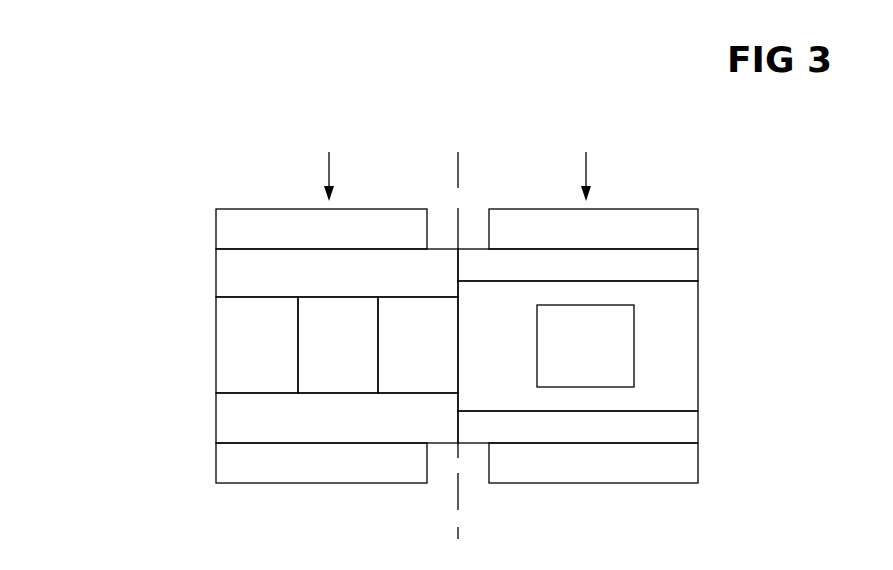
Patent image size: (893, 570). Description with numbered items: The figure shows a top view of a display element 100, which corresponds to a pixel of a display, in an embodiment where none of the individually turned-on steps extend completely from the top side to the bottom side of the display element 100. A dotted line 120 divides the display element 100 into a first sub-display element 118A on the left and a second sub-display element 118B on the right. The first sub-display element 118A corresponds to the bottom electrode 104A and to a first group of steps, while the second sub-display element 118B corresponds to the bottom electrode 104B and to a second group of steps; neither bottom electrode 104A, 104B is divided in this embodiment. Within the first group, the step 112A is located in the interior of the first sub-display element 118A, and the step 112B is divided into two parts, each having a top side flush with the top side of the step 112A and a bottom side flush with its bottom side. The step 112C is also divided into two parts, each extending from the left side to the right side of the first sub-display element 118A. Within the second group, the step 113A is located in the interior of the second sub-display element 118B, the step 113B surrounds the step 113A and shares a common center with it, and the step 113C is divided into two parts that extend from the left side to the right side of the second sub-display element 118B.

The display element 100 is at (113, 219).
The bottom electrode 104A is at (298, 240).
The bottom electrode 104B is at (569, 240).
The individually turned-on step 112A is at (314, 355).
The individually turned-on step 112B is at (234, 355).
The individually turned-on step 112C is at (314, 281).
The individually turned-on step 113A is at (563, 355).
The individually turned-on step 113B is at (466, 310).
The individually turned-on step 113C is at (554, 276).
The first sub-display element 118A is at (329, 163).
The second sub-display element 118B is at (586, 163).
The dotted line 120 is at (457, 170).